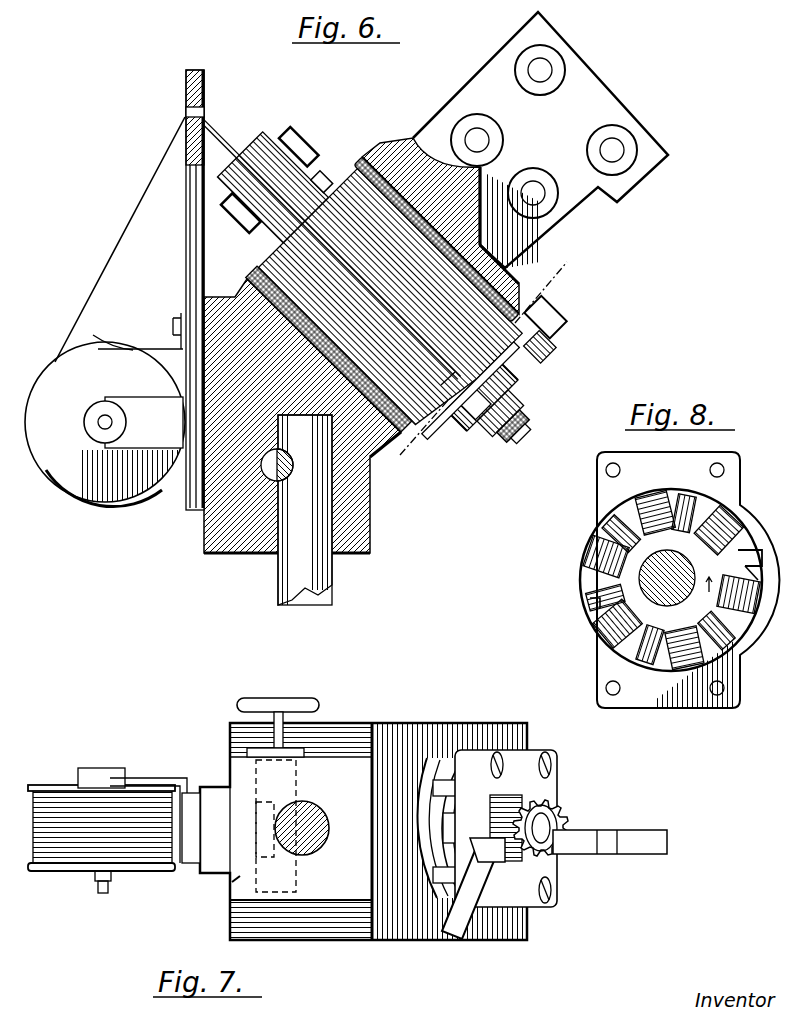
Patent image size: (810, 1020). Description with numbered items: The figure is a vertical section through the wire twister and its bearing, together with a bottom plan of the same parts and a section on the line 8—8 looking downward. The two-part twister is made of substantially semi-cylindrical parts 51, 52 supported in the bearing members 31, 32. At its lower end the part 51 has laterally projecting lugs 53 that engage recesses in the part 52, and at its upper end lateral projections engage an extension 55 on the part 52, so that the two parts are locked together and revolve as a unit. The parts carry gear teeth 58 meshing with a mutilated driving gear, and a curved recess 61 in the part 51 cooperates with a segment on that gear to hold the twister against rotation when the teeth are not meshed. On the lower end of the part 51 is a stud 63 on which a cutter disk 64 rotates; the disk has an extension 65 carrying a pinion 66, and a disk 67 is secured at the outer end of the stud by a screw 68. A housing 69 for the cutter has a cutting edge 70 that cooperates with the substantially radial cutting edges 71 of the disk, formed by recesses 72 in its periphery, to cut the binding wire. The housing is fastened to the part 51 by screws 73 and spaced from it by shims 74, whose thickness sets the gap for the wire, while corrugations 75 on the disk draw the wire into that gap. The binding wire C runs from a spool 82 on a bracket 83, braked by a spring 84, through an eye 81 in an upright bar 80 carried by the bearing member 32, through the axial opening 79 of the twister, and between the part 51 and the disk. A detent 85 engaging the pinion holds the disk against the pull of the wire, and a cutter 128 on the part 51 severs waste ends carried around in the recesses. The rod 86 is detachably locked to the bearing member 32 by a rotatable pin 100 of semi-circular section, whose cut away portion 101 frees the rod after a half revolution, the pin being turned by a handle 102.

In FIG. 6, the section line 8 is at (491, 362).
In FIG. 6, the bearing member 31 is at (577, 62).
In FIG. 7, the bearing member 31 is at (490, 730).
In FIG. 6, the bearing member 32 is at (245, 290).
In FIG. 6, the twister part 51 is at (358, 268).
In FIG. 7, the twister part 51 is at (458, 752).
In FIG. 6, the twister part 52 is at (382, 295).
In FIG. 7, the twister part 52 is at (422, 805).
In FIG. 7, the laterally projecting lugs 53 is at (427, 748).
In FIG. 6, the extension 55 is at (315, 264).
In FIG. 6, the gear teeth 58 is at (299, 147).
In FIG. 6, the curved recess 61 is at (322, 182).
In FIG. 6, the stud 63 is at (540, 347).
In FIG. 6, the cutter disk 64 is at (545, 317).
In FIG. 8, the cutter disk 64 is at (592, 578).
In FIG. 6, the extension 65 is at (500, 413).
In FIG. 7, the extension 65 is at (590, 828).
In FIG. 6, the pinion 66 is at (482, 395).
In FIG. 7, the pinion 66 is at (512, 808).
In FIG. 6, the disk 67 is at (513, 426).
In FIG. 6, the screw 68 is at (521, 434).
In FIG. 6, the housing 69 is at (471, 391).
In FIG. 8, the housing 69 is at (612, 490).
In FIG. 7, the housing 69 is at (532, 757).
In FIG. 8, the cutting edge 70 is at (748, 557).
In FIG. 7, the cutting edge 70 is at (455, 825).
In FIG. 6, the cutting edges 71 is at (474, 403).
In FIG. 8, the cutting edges 71 is at (750, 565).
In FIG. 7, the cutting edges 71 is at (455, 836).
In FIG. 8, the recesses 72 is at (592, 603).
In FIG. 7, the screws 73 is at (553, 766).
In FIG. 7, the shims 74 is at (470, 754).
In FIG. 8, the corrugations 75 is at (592, 548).
In FIG. 6, the axial opening 79 is at (442, 418).
In FIG. 6, the upright bar 80 is at (190, 218).
In FIG. 6, the eye 81 is at (187, 112).
In FIG. 6, the spool 82 is at (80, 478).
In FIG. 7, the spool 82 is at (66, 866).
In FIG. 6, the bracket 83 is at (127, 405).
In FIG. 6, the spring 84 is at (133, 347).
In FIG. 7, the detent 85 is at (512, 873).
In FIG. 6, the rod 86 is at (290, 580).
In FIG. 7, the rod 86 is at (308, 847).
In FIG. 6, the rotatable pin 100 is at (292, 468).
In FIG. 7, the rotatable pin 100 is at (233, 885).
In FIG. 7, the cut away portion 101 is at (258, 850).
In FIG. 7, the handle 102 is at (273, 708).
In FIG. 6, the cutter 128 is at (528, 282).
In FIG. 6, the binding wire C is at (120, 240).